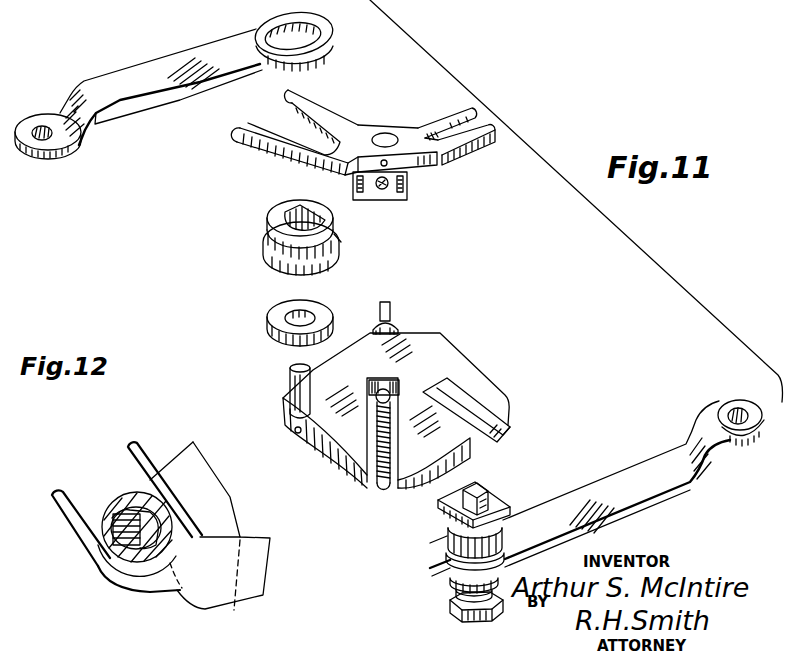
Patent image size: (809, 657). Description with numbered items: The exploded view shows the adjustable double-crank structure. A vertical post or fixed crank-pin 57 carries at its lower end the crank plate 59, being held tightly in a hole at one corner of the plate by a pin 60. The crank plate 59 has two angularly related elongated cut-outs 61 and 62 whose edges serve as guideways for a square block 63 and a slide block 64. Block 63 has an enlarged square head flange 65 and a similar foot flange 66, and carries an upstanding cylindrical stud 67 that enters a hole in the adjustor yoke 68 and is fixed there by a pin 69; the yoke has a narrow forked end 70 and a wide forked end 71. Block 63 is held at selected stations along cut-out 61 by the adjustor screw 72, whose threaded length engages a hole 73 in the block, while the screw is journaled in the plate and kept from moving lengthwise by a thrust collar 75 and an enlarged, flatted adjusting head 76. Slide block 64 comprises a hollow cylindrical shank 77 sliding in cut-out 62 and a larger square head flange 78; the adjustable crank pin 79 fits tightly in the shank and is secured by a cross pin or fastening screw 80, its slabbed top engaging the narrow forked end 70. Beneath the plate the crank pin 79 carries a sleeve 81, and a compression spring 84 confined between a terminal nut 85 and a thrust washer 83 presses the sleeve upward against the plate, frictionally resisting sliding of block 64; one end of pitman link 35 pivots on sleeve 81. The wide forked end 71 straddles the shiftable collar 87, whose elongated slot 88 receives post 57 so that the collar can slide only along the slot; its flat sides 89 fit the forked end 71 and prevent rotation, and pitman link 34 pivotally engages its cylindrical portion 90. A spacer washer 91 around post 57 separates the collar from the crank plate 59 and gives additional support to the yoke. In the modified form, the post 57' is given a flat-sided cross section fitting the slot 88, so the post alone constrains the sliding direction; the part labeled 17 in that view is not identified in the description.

In FIG. 11, the pitman link 34 is at (116, 78).
In FIG. 11, the pitman link 35 is at (640, 474).
In FIG. 12, the fork 17 is at (127, 448).
In FIG. 11, the fixed crank-pin 57 is at (269, 391).
In FIG. 12, the post of flat sided cross sectional shape 57' is at (87, 541).
In FIG. 11, the crank plate 59 is at (396, 410).
In FIG. 12, the crank plate 59 is at (210, 526).
In FIG. 11, the pin 60 is at (296, 433).
In FIG. 11, the elongated cut-out 61 is at (367, 486).
In FIG. 11, the elongated cut-out 62 is at (493, 441).
In FIG. 11, the block 63 is at (368, 195).
In FIG. 11, the slide block 64 is at (465, 548).
In FIG. 11, the head flange 65 is at (407, 172).
In FIG. 11, the foot-flange 66 is at (407, 199).
In FIG. 11, the cylindrical stud 67 is at (387, 134).
In FIG. 11, the adjustor yoke 68 is at (419, 143).
In FIG. 12, the adjustor yoke 68 is at (218, 554).
In FIG. 11, the pin 69 is at (382, 161).
In FIG. 11, the narrow forked end 70 is at (473, 155).
In FIG. 11, the wide forked end 71 is at (289, 102).
In FIG. 11, the adjustor screw 72 is at (383, 490).
In FIG. 11, the hole 73 is at (384, 189).
In FIG. 11, the thrust collar 75 is at (371, 390).
In FIG. 11, the screw adjusting head 76 is at (398, 325).
In FIG. 11, the hollow cylindrical shank 77 is at (454, 537).
In FIG. 11, the square head-flange 78 is at (493, 503).
In FIG. 11, the adjustable crank pin 79 is at (472, 494).
In FIG. 11, the fastening screw 80 is at (495, 530).
In FIG. 11, the sleeve 81 is at (454, 557).
In FIG. 11, the thrust washer 83 is at (455, 578).
In FIG. 11, the compression spring 84 is at (460, 592).
In FIG. 11, the terminal nut 85 is at (458, 606).
In FIG. 11, the shiftable collar 87 is at (290, 229).
In FIG. 12, the shiftable collar 87 is at (105, 541).
In FIG. 11, the elongated slot 88 is at (297, 223).
In FIG. 12, the elongated slot 88 is at (115, 542).
In FIG. 11, the flat sides 89 is at (281, 247).
In FIG. 11, the cylindrical portion 90 is at (333, 229).
In FIG. 11, the spacer washer 91 is at (276, 318).